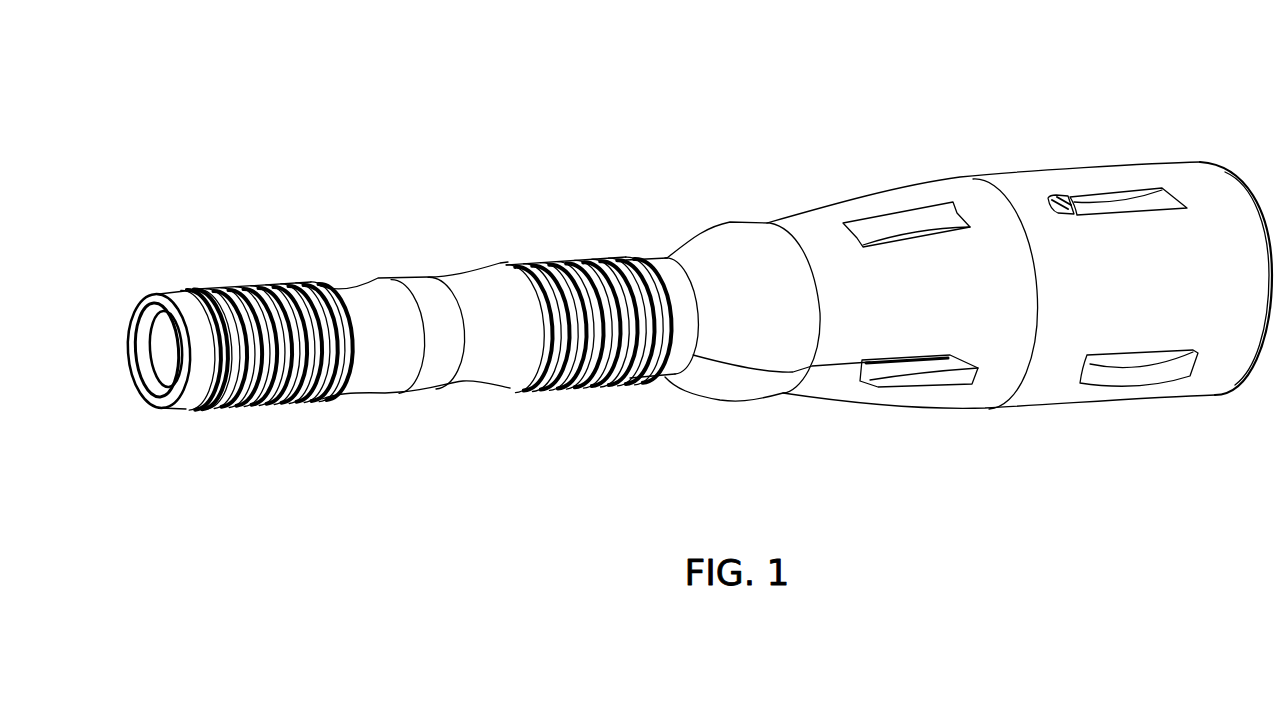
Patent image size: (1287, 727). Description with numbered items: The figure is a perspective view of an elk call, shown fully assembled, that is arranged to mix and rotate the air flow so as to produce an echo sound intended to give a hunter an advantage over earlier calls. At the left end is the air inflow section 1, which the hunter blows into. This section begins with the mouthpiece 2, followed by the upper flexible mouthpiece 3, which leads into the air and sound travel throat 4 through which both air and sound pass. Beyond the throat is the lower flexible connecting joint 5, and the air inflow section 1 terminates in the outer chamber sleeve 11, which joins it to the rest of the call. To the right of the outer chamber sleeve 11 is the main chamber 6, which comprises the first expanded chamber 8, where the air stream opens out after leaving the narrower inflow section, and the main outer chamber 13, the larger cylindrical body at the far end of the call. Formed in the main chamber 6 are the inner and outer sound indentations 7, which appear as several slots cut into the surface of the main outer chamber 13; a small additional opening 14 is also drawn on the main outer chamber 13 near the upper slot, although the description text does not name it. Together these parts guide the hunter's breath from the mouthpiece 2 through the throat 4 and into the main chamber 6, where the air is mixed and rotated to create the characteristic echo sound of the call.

The air inflow section 1 is at (321, 174).
The mouthpiece 2 is at (213, 290).
The upper flexible mouthpiece 3 is at (273, 283).
The air and sound travel throat 4 is at (417, 287).
The lower flexible connecting joint 5 is at (550, 267).
The main chamber 6 is at (895, 107).
The inner and outer sound indentations 7 is at (1157, 200).
The first expanded chamber 8 is at (702, 247).
The outer chamber sleeve 11 is at (641, 279).
The main outer chamber 13 is at (977, 283).
The hole 14 is at (1068, 212).